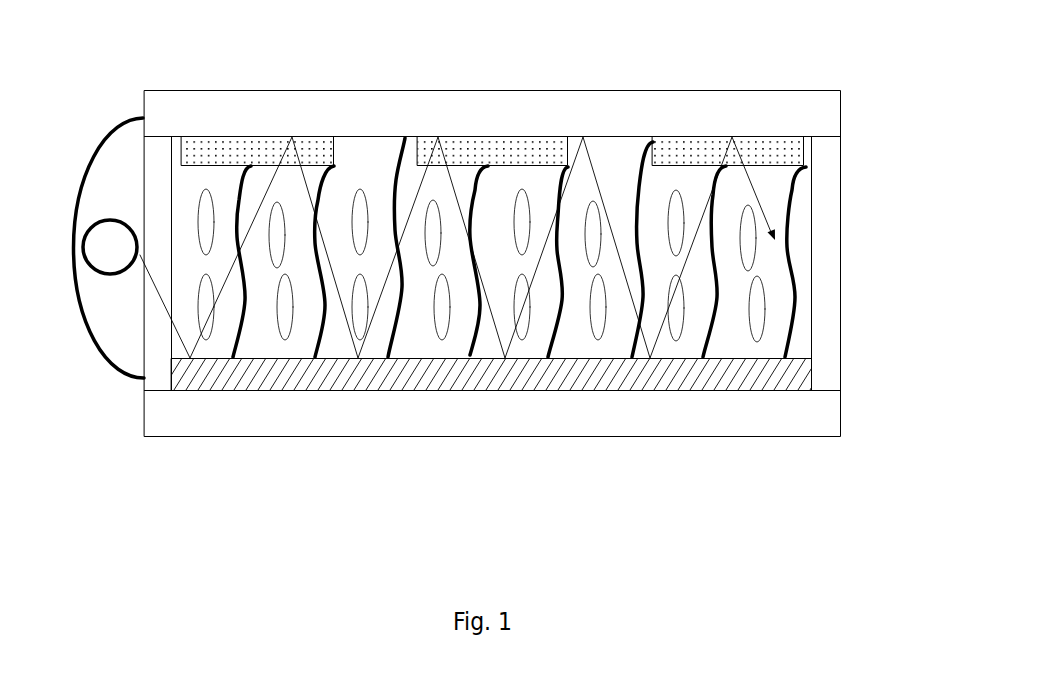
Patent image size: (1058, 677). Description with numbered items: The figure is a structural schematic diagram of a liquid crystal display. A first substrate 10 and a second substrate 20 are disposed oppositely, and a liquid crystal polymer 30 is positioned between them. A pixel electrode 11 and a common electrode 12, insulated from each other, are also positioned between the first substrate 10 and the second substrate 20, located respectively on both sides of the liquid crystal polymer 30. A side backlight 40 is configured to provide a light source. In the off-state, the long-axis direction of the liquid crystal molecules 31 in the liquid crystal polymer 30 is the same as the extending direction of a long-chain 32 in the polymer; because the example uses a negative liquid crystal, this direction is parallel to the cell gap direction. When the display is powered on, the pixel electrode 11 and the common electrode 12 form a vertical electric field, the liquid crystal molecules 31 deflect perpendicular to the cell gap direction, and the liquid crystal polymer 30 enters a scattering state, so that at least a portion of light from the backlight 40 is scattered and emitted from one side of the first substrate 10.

The first substrate 10 is at (545, 103).
The pixel electrode 11 is at (408, 380).
The common electrode 12 is at (277, 150).
The second substrate 20 is at (610, 430).
The liquid crystal polymer 30 is at (549, 247).
The liquid crystal molecules 31 is at (757, 264).
The long-chain 32 is at (793, 208).
The side backlight 40 is at (85, 333).